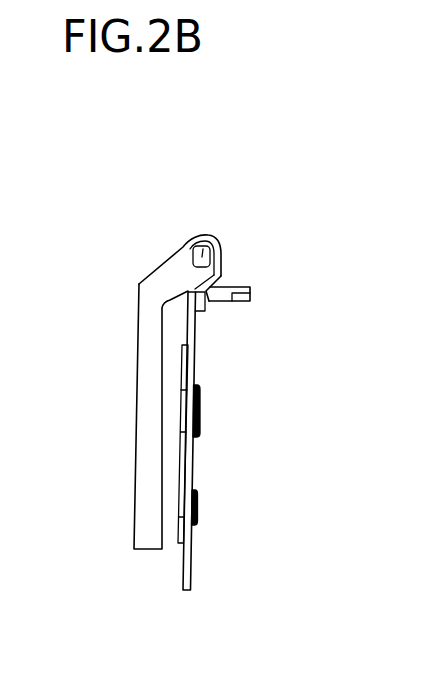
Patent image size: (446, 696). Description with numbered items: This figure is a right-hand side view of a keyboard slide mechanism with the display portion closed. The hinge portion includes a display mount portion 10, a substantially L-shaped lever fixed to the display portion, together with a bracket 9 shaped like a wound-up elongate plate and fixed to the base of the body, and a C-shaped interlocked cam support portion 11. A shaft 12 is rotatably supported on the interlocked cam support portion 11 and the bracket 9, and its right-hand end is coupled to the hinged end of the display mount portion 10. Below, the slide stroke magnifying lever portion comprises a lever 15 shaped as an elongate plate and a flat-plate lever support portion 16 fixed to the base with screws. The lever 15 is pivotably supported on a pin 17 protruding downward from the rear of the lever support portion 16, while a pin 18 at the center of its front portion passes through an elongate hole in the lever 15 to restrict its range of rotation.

The bracket 9 is at (228, 302).
The display mount portion 10 is at (142, 427).
The interlocked cam support portion 11 is at (231, 285).
The shaft 12 is at (225, 252).
The lever 15 is at (197, 577).
The lever support portion 16 is at (179, 543).
The pin 17 is at (198, 410).
The pin 18 is at (198, 505).